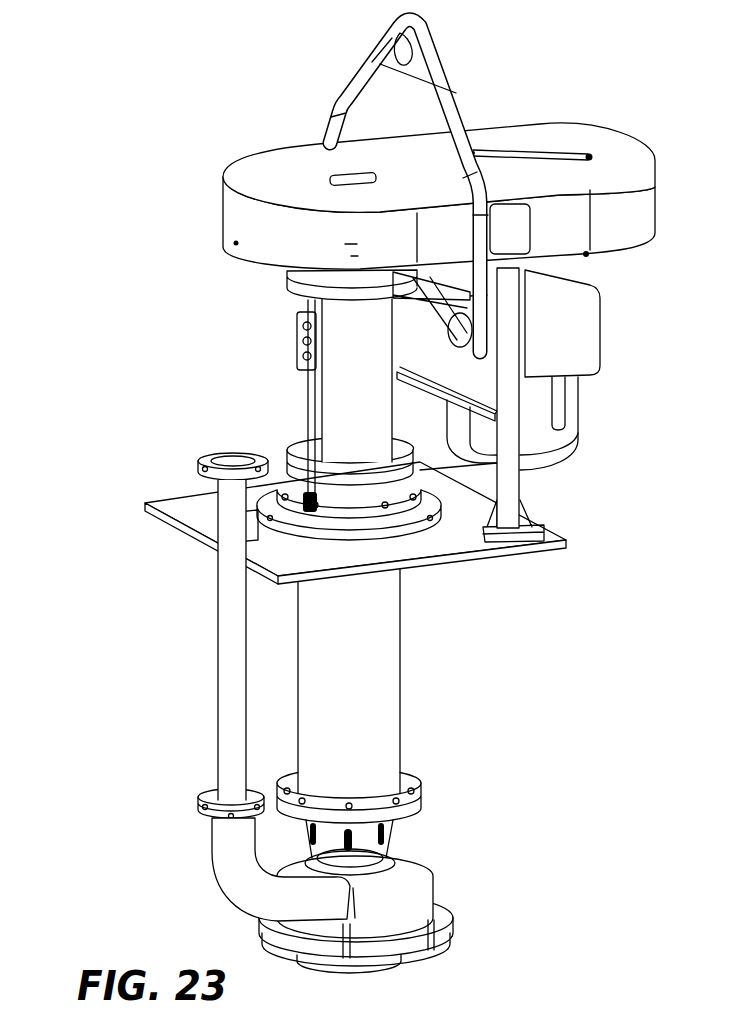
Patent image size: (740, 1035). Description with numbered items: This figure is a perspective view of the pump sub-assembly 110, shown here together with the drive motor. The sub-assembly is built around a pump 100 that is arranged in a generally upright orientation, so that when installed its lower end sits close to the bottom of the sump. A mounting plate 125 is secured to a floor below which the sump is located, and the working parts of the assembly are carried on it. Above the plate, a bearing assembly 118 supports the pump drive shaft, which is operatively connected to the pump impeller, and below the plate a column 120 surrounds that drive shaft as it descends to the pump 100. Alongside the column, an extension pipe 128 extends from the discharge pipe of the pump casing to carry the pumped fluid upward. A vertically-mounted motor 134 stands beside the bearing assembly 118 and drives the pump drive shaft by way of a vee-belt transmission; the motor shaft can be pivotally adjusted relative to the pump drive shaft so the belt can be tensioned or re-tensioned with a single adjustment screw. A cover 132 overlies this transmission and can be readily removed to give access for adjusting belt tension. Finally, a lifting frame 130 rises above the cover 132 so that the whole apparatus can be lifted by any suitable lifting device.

The pump 100 is at (458, 870).
The pump sub-assembly 110 is at (360, 496).
The bearing assembly 118 is at (352, 403).
The column 120 is at (401, 675).
The mounting plate 125 is at (450, 538).
The extension pipe 128 is at (228, 679).
The lifting frame 130 is at (449, 106).
The cover 132 is at (547, 140).
The motor 134 is at (566, 430).